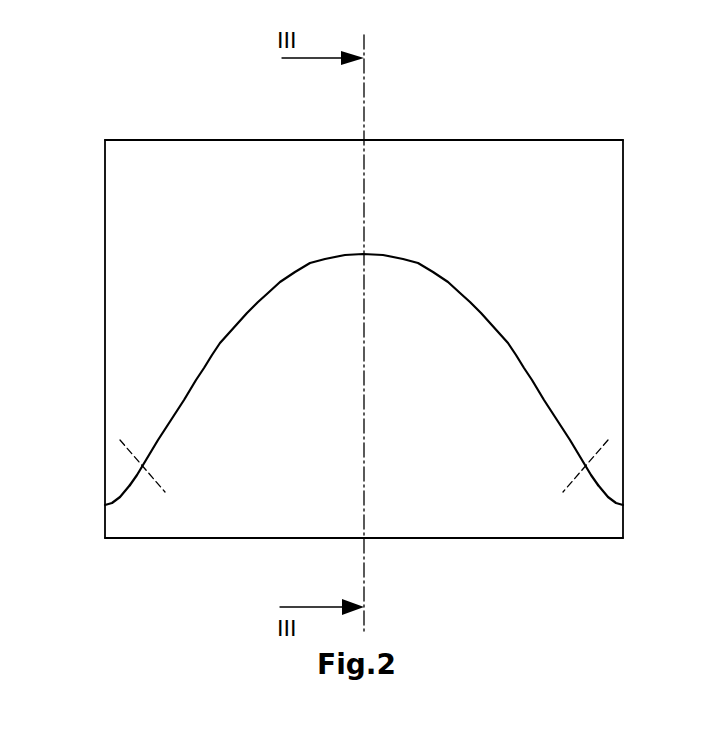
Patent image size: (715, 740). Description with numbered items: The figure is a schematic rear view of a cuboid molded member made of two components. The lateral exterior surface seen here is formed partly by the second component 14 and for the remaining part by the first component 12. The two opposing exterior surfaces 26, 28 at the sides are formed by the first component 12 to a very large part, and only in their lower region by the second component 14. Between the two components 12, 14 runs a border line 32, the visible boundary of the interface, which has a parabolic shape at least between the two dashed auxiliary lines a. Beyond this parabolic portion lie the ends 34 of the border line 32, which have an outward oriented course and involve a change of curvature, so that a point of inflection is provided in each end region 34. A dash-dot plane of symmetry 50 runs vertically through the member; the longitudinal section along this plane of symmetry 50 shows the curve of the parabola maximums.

The first component 12 is at (543, 205).
The second component 14 is at (458, 402).
The exterior surface 26 is at (88, 263).
The exterior surface 28 is at (647, 431).
The border line 32 is at (502, 330).
The ends of the border line 34 is at (139, 500).
The plane of symmetry 50 is at (364, 172).
The auxiliary lines a is at (150, 470).